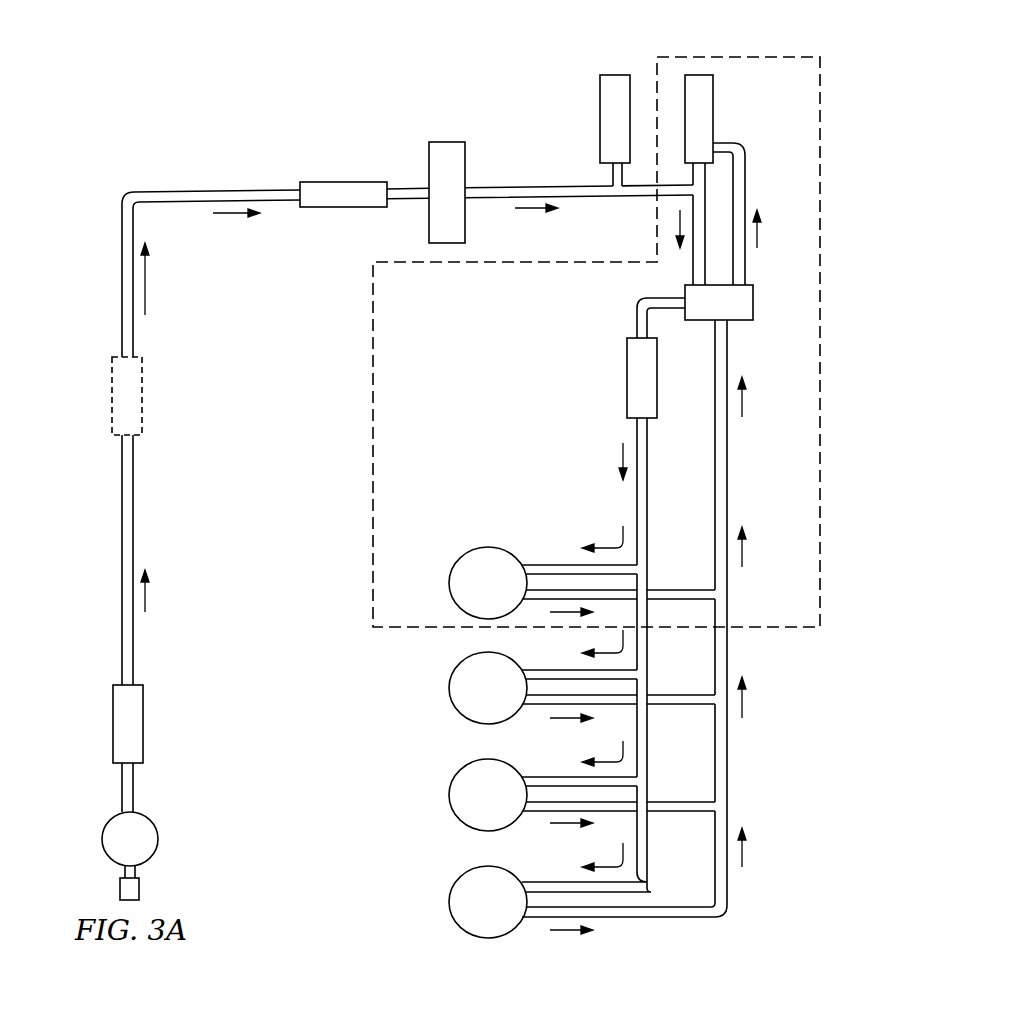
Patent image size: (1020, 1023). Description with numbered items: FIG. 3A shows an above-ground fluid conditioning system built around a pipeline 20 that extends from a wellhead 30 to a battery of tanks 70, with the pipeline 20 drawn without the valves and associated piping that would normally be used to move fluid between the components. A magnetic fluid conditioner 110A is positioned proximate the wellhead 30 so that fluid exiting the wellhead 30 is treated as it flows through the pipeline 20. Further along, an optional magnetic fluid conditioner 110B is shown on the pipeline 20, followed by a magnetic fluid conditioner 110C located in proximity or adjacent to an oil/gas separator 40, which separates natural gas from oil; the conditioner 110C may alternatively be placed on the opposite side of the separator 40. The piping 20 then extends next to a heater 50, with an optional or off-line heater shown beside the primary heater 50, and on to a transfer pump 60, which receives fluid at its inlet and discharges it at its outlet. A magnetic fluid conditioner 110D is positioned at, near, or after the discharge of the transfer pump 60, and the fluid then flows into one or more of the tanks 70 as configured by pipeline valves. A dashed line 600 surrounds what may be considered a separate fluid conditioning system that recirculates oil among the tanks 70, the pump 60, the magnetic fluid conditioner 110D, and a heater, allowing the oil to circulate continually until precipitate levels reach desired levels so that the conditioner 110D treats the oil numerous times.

The pipeline 20 is at (191, 191).
The wellhead 30 is at (102, 840).
The oil/gas separator 40 is at (447, 142).
The heater 50 is at (713, 105).
The transfer pump 60 is at (753, 302).
The tanks 70 is at (449, 583).
The magnetic fluid conditioner 110A is at (113, 725).
The magnetic fluid conditioner 110B is at (112, 395).
The magnetic fluid conditioner 110C is at (343, 182).
The magnetic fluid conditioner 110D is at (627, 380).
The dashed line 600 is at (506, 448).